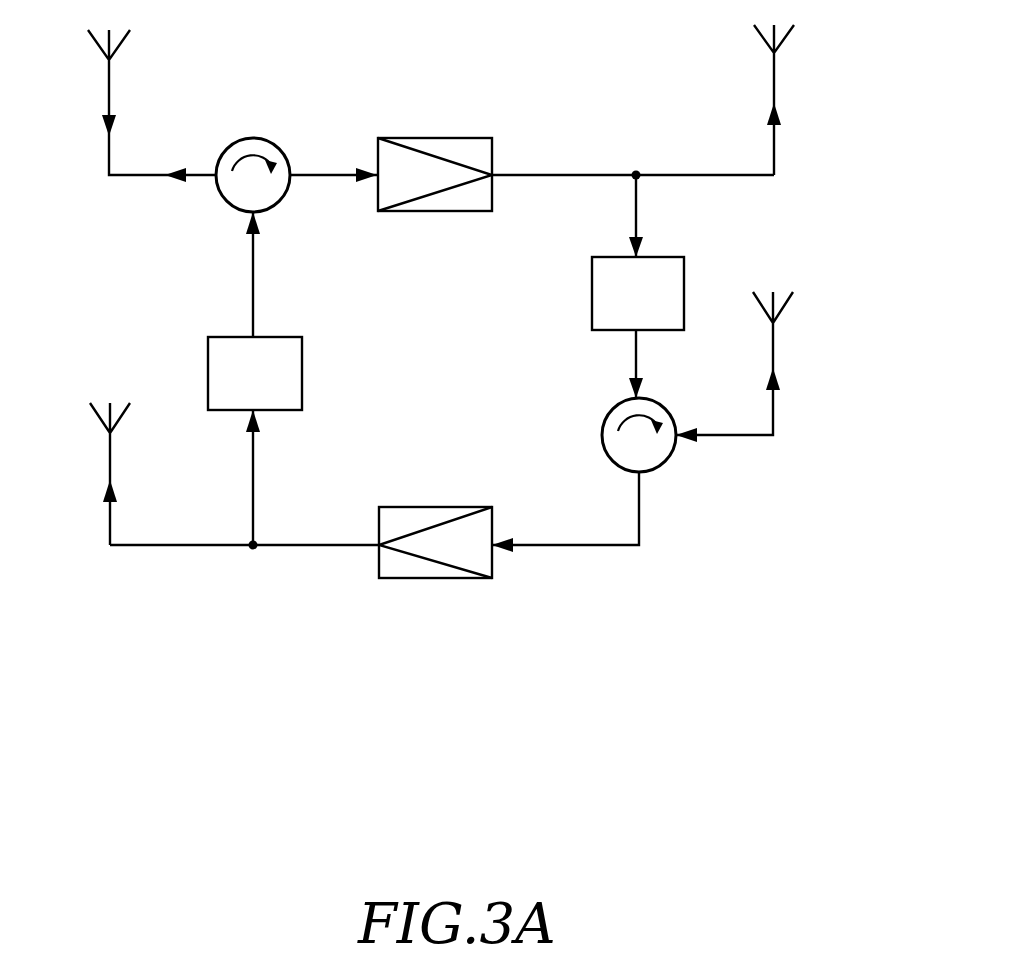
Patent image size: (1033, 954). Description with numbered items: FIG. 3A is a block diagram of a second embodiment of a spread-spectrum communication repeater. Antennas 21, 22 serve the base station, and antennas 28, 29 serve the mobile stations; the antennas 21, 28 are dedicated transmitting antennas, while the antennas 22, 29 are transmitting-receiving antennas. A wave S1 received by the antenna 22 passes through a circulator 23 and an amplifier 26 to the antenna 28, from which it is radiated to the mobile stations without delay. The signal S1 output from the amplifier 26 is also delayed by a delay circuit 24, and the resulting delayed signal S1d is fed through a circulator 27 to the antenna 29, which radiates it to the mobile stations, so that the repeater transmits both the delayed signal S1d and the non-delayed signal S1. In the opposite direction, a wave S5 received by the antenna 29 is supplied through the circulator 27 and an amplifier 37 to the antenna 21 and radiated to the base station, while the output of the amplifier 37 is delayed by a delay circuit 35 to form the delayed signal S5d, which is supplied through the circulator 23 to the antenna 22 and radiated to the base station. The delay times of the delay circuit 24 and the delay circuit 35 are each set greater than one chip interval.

The antenna 21 is at (784, 45).
The antenna 22 is at (793, 292).
The circulator 23 is at (666, 413).
The delay circuit 24 is at (302, 352).
The amplifier 26 is at (426, 507).
The circulator 27 is at (313, 128).
The antenna 28 is at (118, 420).
The antenna 29 is at (120, 40).
The delay circuit 35 is at (670, 257).
The amplifier 37 is at (426, 137).